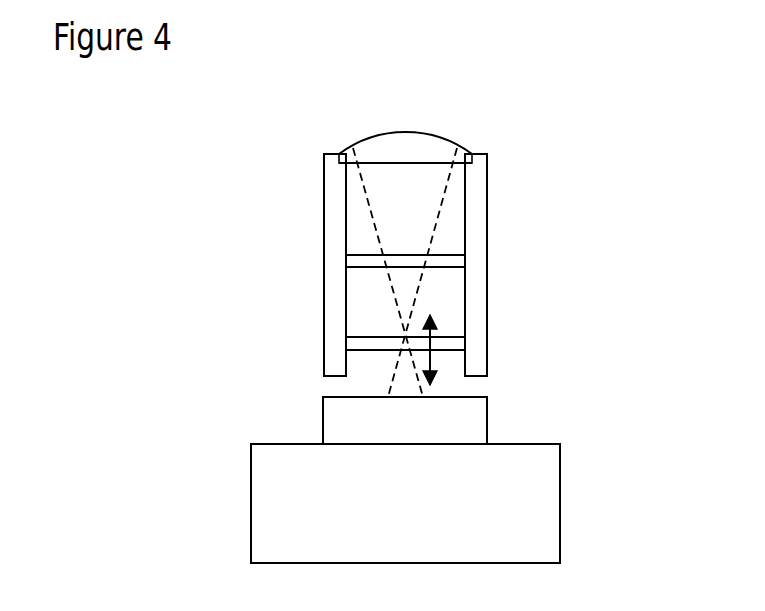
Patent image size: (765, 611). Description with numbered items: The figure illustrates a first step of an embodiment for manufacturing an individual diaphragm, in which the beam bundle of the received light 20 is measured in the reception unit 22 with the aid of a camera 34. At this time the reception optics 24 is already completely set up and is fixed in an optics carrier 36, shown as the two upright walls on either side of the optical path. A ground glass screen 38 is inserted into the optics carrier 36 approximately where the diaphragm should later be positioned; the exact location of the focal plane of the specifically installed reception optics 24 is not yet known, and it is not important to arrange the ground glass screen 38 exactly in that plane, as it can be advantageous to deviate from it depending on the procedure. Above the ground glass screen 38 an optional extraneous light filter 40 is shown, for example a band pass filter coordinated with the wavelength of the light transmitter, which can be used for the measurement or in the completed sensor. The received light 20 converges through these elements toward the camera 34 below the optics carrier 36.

The received light 20 is at (375, 227).
The reception unit 22 is at (393, 257).
The reception optics 24 is at (408, 145).
The camera 34 is at (503, 503).
The optics carrier 36 is at (482, 192).
The ground glass screen 38 is at (448, 338).
The extraneous light filter 40 is at (450, 262).